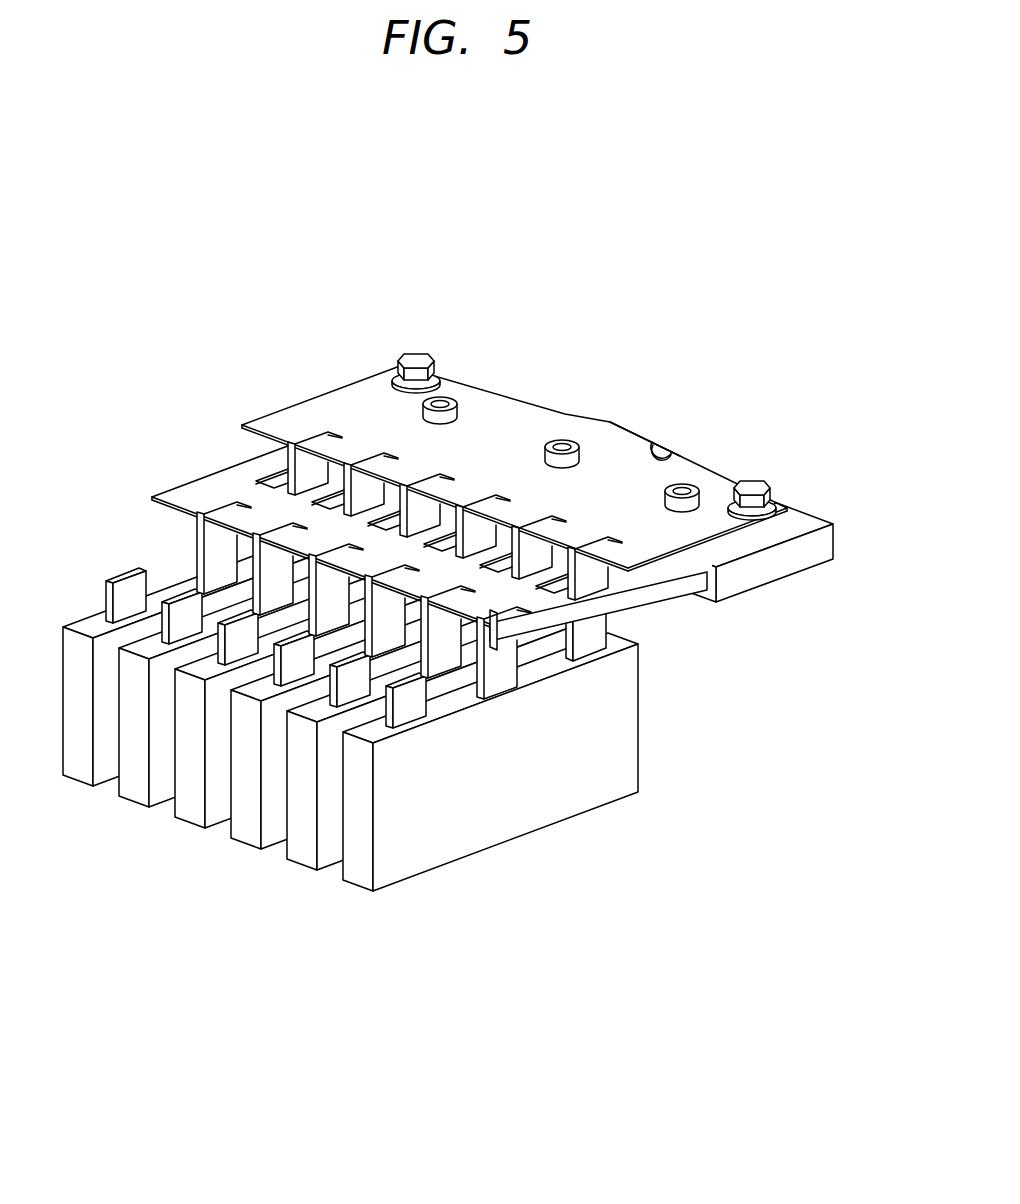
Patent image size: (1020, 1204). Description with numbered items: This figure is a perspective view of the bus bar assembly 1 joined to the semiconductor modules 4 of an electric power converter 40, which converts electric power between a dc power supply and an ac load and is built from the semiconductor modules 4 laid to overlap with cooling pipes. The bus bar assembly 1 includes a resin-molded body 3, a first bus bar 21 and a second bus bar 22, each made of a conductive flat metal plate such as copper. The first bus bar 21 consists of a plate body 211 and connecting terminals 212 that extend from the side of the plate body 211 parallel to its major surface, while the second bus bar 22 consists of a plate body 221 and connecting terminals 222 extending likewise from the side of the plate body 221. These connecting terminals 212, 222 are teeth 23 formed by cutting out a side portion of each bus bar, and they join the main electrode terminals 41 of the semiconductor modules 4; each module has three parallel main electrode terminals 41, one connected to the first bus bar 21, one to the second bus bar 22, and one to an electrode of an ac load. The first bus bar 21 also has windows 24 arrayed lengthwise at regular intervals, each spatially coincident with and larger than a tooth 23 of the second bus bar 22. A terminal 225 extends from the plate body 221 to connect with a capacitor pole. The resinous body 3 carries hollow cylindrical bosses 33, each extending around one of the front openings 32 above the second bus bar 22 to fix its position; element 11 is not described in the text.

The bus bar assembly 1 is at (378, 365).
The resin-molded body 3 is at (782, 570).
The semiconductor module 4 is at (185, 805).
The bolt 11 is at (750, 490).
The first bus bar 21 is at (640, 598).
The second bus bar 22 is at (352, 403).
The teeth 23 is at (480, 493).
The windows 24 is at (280, 485).
The front openings 32 is at (562, 440).
The hollow cylindrical bosses 33 is at (458, 407).
The electric power converter 40 is at (300, 938).
The main electrode terminals 41 is at (213, 542).
The plate body 211 is at (685, 603).
The connecting terminals 212 is at (200, 492).
The plate body 221 is at (673, 475).
The connecting terminals 222 is at (457, 487).
The terminal 225 is at (630, 433).